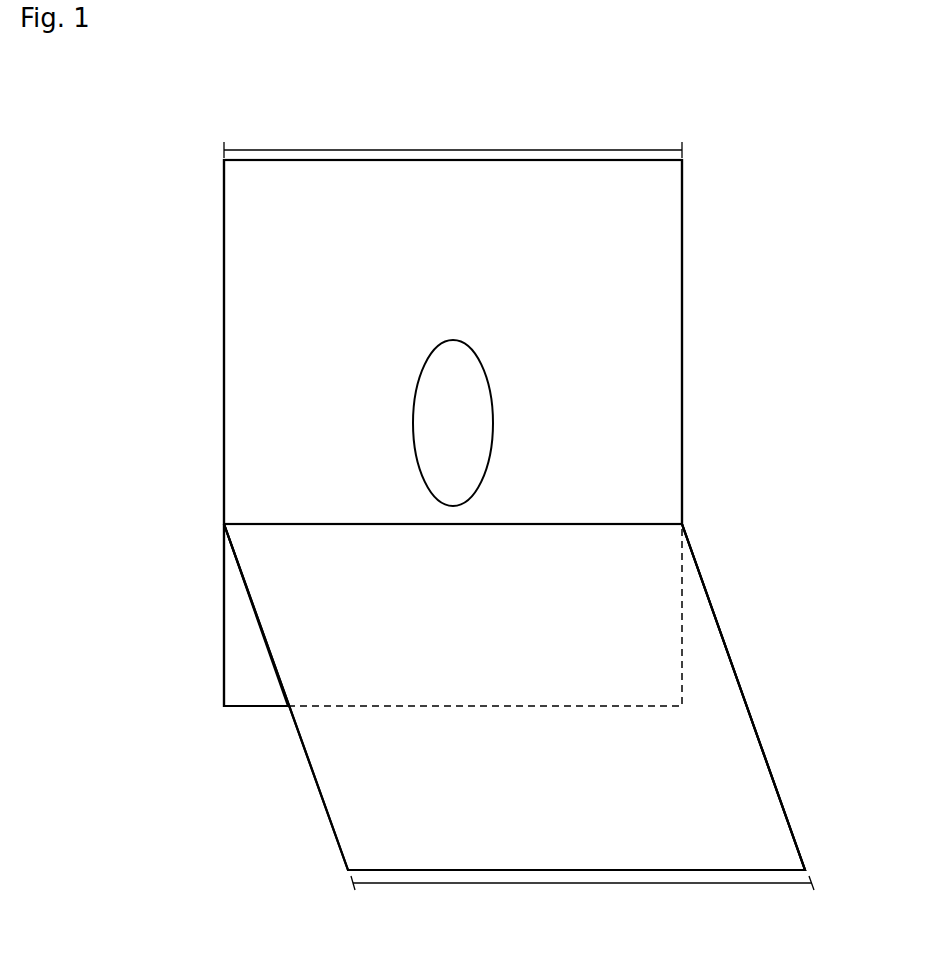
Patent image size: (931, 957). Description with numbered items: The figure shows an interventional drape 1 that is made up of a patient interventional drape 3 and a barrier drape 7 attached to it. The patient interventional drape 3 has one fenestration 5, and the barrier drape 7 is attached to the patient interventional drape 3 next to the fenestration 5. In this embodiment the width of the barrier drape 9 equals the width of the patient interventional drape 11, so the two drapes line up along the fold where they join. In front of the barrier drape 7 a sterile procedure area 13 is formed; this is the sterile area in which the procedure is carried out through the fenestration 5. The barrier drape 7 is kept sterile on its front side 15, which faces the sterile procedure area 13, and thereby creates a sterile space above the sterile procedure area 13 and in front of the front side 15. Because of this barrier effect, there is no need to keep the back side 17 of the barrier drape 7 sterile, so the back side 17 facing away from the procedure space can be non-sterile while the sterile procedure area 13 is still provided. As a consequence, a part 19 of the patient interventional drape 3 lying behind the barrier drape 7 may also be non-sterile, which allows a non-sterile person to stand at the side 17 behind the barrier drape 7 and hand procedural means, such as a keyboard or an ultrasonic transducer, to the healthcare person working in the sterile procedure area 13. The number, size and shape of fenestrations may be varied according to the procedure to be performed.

The interventional drape 1 is at (712, 515).
The patient interventional drape 3 is at (222, 634).
The fenestration 5 is at (443, 424).
The barrier drape 7 is at (761, 737).
The width of the barrier drape 9 is at (611, 888).
The width of the patient interventional drape 11 is at (452, 146).
The sterile procedure area 13 is at (265, 330).
The front side 15 is at (367, 827).
The back side 17 is at (340, 745).
The part of the patient interventional drape 19 is at (247, 670).